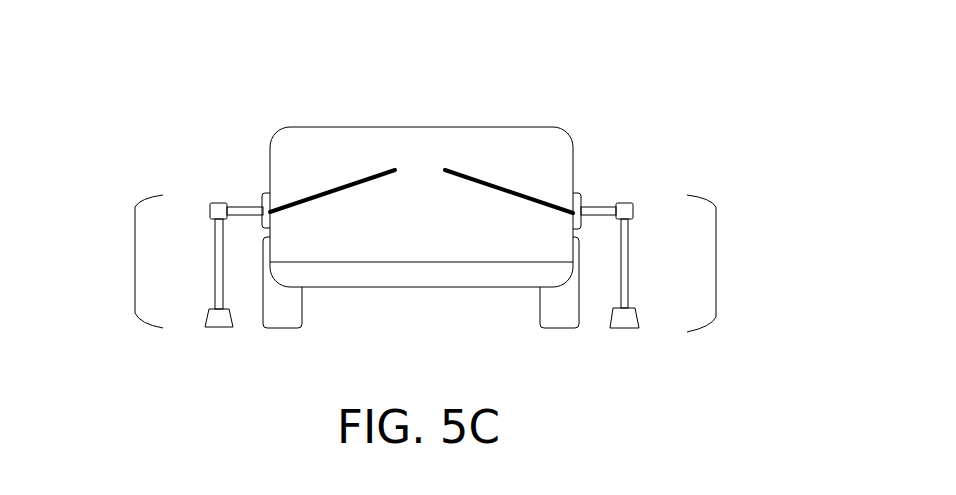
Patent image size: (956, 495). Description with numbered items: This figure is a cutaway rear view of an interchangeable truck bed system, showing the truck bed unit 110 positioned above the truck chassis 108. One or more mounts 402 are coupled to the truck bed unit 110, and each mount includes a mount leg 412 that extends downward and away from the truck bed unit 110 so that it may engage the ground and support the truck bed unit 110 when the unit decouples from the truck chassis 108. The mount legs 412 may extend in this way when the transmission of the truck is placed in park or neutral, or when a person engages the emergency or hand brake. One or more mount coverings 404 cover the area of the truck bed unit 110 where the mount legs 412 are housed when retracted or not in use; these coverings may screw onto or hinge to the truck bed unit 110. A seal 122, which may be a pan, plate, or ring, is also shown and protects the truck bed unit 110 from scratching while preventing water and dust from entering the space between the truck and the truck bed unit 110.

The truck bed unit 110 is at (495, 127).
The mount covering 404 is at (421, 185).
The mount leg 412 is at (220, 203).
The mount 402 is at (135, 263).
The seal 122 is at (278, 327).
The truck chassis 108 is at (500, 286).